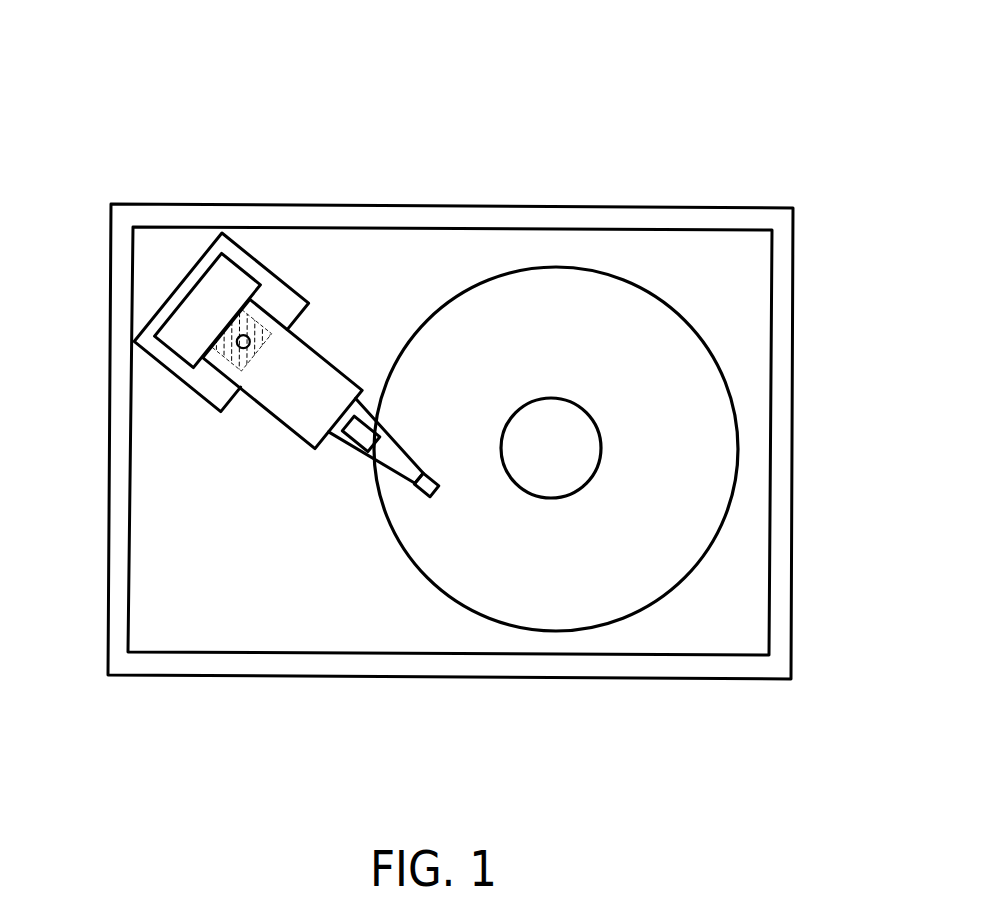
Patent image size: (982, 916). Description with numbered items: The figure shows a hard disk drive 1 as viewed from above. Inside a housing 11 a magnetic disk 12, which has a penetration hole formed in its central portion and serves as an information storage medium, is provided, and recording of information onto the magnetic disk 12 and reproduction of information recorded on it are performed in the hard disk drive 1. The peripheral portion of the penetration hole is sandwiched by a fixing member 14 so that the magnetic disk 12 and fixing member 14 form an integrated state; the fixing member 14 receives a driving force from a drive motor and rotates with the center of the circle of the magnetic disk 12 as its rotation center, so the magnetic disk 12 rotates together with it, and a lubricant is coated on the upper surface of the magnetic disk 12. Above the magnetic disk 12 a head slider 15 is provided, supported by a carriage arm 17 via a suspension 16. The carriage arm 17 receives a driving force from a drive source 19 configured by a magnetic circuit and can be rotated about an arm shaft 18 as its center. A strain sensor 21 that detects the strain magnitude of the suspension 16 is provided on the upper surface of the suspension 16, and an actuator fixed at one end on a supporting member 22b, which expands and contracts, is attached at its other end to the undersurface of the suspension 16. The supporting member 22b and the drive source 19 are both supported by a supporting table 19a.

The hard disk drive 1 is at (612, 86).
The housing 11 is at (703, 208).
The magnetic disk 12 is at (592, 570).
The fixing member 14 is at (553, 452).
The head slider 15 is at (422, 490).
The suspension 16 is at (398, 463).
The carriage arm 17 is at (293, 403).
The arm shaft 18 is at (243, 307).
The drive source 19 is at (182, 338).
The supporting table 19a is at (187, 370).
The strain sensor 21 is at (350, 452).
The supporting member 22b is at (263, 320).